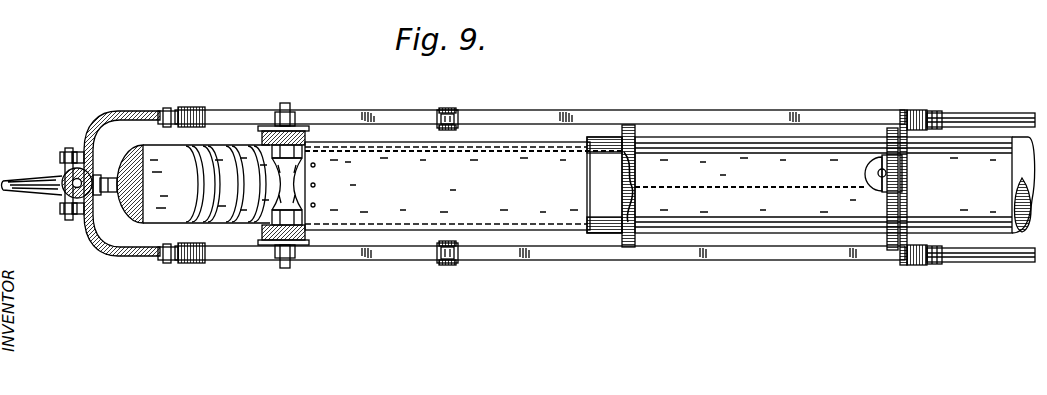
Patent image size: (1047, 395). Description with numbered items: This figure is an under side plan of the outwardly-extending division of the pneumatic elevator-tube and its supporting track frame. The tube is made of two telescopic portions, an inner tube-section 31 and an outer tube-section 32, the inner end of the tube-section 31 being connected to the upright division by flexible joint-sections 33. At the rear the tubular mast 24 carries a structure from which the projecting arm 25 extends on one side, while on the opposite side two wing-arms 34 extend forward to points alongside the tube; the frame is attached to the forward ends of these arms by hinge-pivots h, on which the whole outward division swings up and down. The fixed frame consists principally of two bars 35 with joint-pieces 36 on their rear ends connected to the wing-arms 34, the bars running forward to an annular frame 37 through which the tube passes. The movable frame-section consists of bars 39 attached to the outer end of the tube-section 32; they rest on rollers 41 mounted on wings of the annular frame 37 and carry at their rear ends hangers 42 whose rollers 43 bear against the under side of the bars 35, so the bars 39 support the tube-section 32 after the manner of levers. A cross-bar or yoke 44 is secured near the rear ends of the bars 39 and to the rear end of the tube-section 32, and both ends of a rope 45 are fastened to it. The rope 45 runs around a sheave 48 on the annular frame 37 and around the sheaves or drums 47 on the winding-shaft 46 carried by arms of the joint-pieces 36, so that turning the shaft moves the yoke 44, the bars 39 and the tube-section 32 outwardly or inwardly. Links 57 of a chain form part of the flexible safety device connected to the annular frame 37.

The tubular mast 24 is at (66, 172).
The projecting arm 25 is at (38, 196).
The tube-section 31 is at (463, 185).
The tube-section 32 is at (835, 185).
The joint-sections 33 is at (128, 162).
The wing-arms 34 is at (128, 113).
The bars 35 is at (555, 110).
The joint-pieces 36 is at (197, 108).
The annular frame 37 is at (907, 203).
The bars 39 is at (970, 263).
The rollers 41 is at (931, 112).
The hangers 42 is at (440, 111).
The rollers 43 is at (458, 117).
The cross-bar or yoke 44 is at (636, 130).
The rope 45 is at (403, 152).
The winding-shaft 46 is at (288, 104).
The sheaves or drums 47 is at (302, 197).
The sheave 48 is at (864, 178).
The links of a chain 57 is at (105, 198).
The hinge-pivots h is at (164, 110).